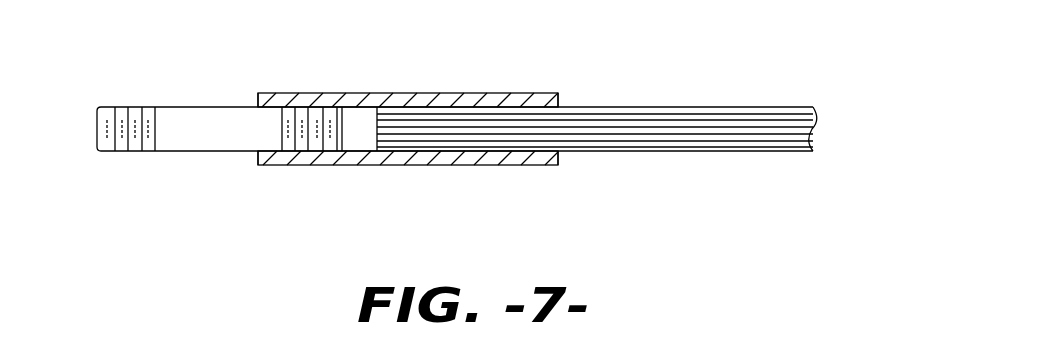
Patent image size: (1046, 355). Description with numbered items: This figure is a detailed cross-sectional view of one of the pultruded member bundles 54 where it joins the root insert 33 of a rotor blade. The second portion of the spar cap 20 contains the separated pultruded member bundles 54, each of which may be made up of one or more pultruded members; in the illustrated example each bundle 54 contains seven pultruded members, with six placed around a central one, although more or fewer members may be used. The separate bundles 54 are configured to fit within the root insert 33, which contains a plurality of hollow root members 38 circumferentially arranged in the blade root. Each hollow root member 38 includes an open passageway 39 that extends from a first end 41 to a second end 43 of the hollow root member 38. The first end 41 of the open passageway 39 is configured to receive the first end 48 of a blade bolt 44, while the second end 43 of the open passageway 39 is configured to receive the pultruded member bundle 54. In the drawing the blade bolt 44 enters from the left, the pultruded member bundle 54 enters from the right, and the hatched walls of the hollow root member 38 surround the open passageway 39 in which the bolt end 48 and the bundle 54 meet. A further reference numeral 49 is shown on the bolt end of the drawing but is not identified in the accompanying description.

The spar cap 20 is at (758, 105).
The root insert 33 is at (398, 165).
The hollow root member 38 is at (446, 93).
The open passageway 39 is at (362, 122).
The first end 41 is at (260, 96).
The second end 43 is at (558, 103).
The blade bolt 44 is at (200, 151).
The first end of blade bolt 48 is at (305, 139).
The outer grooves 49 is at (122, 142).
The pultruded member bundle 54 is at (647, 105).